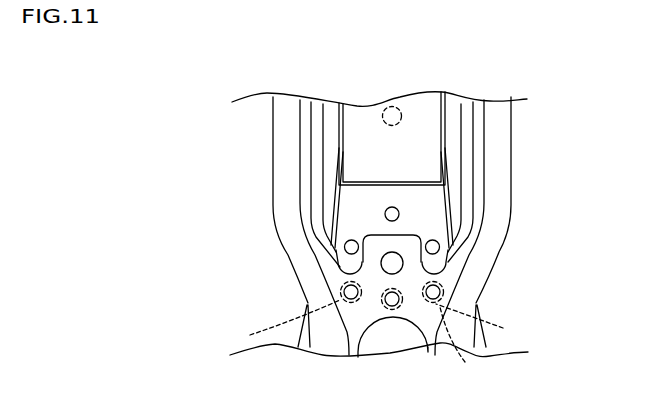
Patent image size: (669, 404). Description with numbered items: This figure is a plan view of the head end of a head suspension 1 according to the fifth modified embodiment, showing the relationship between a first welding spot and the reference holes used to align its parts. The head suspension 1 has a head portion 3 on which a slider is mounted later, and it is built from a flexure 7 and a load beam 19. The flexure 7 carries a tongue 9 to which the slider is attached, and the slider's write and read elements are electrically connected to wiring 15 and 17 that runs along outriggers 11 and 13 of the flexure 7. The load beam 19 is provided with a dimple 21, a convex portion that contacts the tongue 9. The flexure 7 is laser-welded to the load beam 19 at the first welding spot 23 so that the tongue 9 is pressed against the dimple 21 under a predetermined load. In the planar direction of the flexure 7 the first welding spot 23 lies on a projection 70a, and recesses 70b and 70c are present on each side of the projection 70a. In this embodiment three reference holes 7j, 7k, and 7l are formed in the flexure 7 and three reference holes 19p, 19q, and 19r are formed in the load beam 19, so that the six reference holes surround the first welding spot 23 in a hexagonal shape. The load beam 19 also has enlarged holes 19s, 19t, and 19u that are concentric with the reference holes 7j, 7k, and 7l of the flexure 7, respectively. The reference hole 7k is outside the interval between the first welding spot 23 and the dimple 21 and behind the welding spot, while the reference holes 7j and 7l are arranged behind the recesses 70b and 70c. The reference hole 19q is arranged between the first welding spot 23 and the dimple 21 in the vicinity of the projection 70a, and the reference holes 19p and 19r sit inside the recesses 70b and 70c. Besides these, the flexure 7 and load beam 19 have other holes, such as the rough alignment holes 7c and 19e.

The head suspension 1 is at (487, 89).
The head portion 3 is at (431, 97).
The flexure 7 is at (500, 268).
The tongue 9 is at (446, 108).
The outrigger 11 is at (306, 123).
The outrigger 13 is at (473, 172).
The wiring 15 is at (282, 137).
The wiring 17 is at (498, 157).
The load beam 19 is at (498, 345).
The dimple 21 is at (383, 110).
The first welding spot 23 is at (386, 270).
The rough alignment hole 7c is at (407, 338).
The reference hole 7j is at (342, 294).
The reference hole 7k is at (386, 302).
The reference hole 7l is at (440, 294).
The rough alignment hole 19e is at (390, 357).
The reference hole 19p is at (344, 247).
The reference hole 19q is at (398, 211).
The reference hole 19r is at (440, 247).
The enlarged hole 19s is at (250, 335).
The enlarged hole 19t is at (465, 362).
The enlarged hole 19u is at (503, 328).
The projection 70a is at (389, 234).
The recess 70b is at (338, 262).
The recess 70c is at (447, 258).